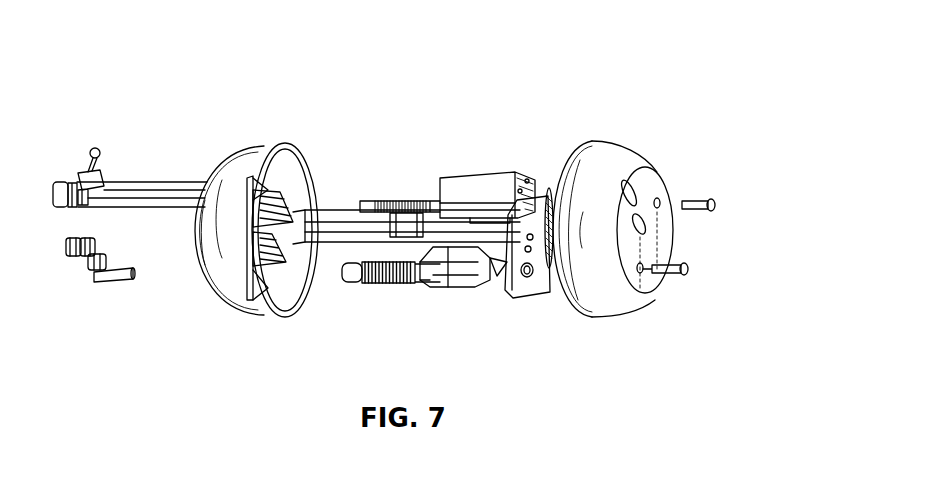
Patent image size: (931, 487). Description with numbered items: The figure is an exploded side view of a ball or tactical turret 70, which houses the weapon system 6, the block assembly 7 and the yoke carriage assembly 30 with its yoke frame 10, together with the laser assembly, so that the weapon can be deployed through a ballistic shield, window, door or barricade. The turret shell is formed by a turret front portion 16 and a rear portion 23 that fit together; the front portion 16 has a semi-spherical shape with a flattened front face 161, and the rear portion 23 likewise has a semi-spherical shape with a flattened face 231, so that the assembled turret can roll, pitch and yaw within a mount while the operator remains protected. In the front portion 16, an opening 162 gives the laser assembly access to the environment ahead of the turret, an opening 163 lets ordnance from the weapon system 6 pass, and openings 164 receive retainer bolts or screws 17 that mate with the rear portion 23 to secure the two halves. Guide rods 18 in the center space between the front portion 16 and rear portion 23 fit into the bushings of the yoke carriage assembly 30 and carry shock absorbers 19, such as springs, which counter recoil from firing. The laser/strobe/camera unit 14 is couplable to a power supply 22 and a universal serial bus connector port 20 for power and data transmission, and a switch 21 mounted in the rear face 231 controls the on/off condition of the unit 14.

The tactical turret 70 is at (195, 32).
The turret rear portion 23 is at (268, 146).
The flattened face 231 is at (196, 282).
The power supply 22 is at (156, 235).
The universal serial bus connector port 20 is at (94, 172).
The switch 21 is at (90, 266).
The weapon system 6 is at (335, 195).
The laser/strobe/camera unit 14 is at (447, 176).
The shock absorbers 19 is at (375, 284).
The guide rods 18 is at (437, 290).
The block assembly 7 is at (493, 300).
The yoke frame 10 is at (523, 290).
The yoke carriage assembly 30 is at (535, 145).
The turret front portion 16 is at (622, 150).
The opening 162 is at (636, 180).
The flattened front face 161 is at (648, 232).
The openings 164 is at (661, 204).
The retainer bolts/screws 17 is at (716, 206).
The opening 163 is at (690, 268).